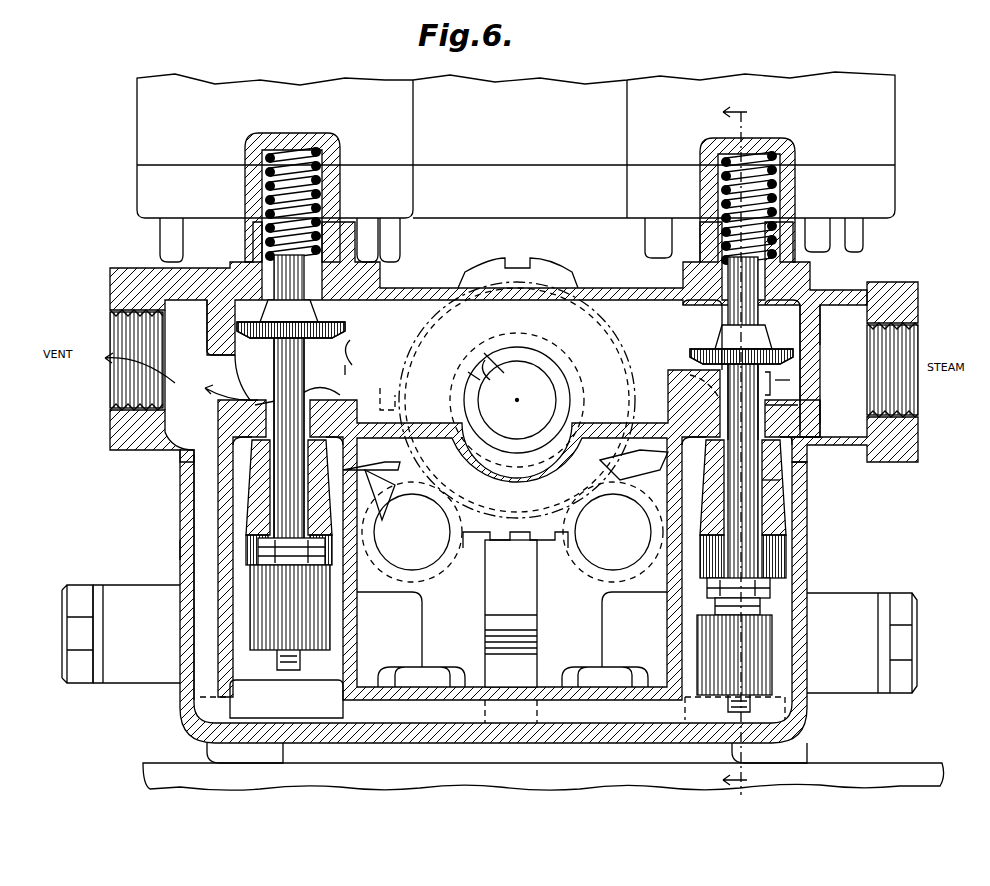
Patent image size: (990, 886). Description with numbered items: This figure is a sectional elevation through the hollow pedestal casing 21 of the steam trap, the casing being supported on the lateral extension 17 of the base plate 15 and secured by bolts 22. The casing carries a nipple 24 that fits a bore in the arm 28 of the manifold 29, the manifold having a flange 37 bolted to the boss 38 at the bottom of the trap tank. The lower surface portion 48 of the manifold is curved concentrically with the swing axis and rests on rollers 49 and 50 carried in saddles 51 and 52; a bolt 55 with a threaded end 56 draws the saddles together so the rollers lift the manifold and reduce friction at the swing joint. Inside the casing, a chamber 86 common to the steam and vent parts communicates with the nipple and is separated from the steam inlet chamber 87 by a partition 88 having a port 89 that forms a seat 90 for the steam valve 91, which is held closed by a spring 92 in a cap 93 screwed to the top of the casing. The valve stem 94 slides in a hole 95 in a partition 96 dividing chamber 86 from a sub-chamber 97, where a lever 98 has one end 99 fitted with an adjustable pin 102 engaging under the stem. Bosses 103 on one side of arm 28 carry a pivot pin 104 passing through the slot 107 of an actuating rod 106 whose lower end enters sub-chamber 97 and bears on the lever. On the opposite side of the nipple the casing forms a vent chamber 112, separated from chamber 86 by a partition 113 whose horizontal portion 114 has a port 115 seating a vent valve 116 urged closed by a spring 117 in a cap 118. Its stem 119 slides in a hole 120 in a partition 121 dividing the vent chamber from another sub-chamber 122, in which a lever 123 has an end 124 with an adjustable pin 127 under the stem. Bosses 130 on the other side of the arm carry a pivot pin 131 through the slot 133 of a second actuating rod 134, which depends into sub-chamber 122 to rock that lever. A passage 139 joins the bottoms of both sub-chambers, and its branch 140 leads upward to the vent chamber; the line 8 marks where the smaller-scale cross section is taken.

The section line 8— 8 is at (735, 450).
The base plate 15 is at (838, 778).
The lateral extension 17 is at (182, 770).
The hollow pedestal casing 21 is at (565, 448).
The bolts 22 is at (440, 672).
The nipple 24 is at (560, 395).
The arm of manifold 28 is at (485, 360).
The manifold 29 is at (538, 240).
The flange 37 is at (877, 185).
The boss 38 is at (877, 108).
The lower surface portion 48 is at (515, 512).
The roller 49 is at (432, 558).
The roller 50 is at (602, 558).
The saddle 51 is at (498, 545).
The saddle 52 is at (537, 576).
The bolt 55 is at (500, 615).
The threaded end 56 is at (402, 501).
The chamber 86 is at (517, 395).
The steam inlet chamber 87 is at (869, 352).
The partition 88 is at (522, 400).
The port 89 is at (772, 387).
The seat 90 is at (795, 358).
The valve 91 is at (777, 350).
The spring 92 is at (760, 228).
The cap 93 is at (790, 178).
The stem 94 is at (770, 478).
The hole 95 is at (780, 496).
The partition 96 is at (780, 432).
The sub-chamber 97 is at (790, 520).
The lever 98 is at (775, 605).
The end of lever 99 is at (765, 655).
The adjustable pin 102 is at (775, 586).
The bosses 103 is at (645, 452).
The pivot pin 104 is at (700, 398).
The actuating rod 106 is at (735, 390).
The slot 107 is at (794, 391).
The vent chamber 112 is at (180, 360).
The partition 113 is at (215, 332).
The horizontal portion 114 is at (396, 384).
The port 115 is at (350, 365).
The valve 116 is at (335, 333).
The spring 117 is at (282, 184).
The cap 118 is at (338, 188).
The stem 119 is at (231, 395).
The hole 120 is at (228, 468).
The partition 121 is at (250, 410).
The sub-chamber 122 is at (228, 497).
The lever 123 is at (272, 590).
The end of lever 124 is at (270, 628).
The adjustable pin 127 is at (345, 537).
The bosses 130 is at (345, 478).
The pivot pin 131 is at (254, 407).
The slot 133 is at (329, 400).
The actuating rod 134 is at (345, 495).
The passage 139 is at (422, 730).
The branch 140 is at (200, 543).